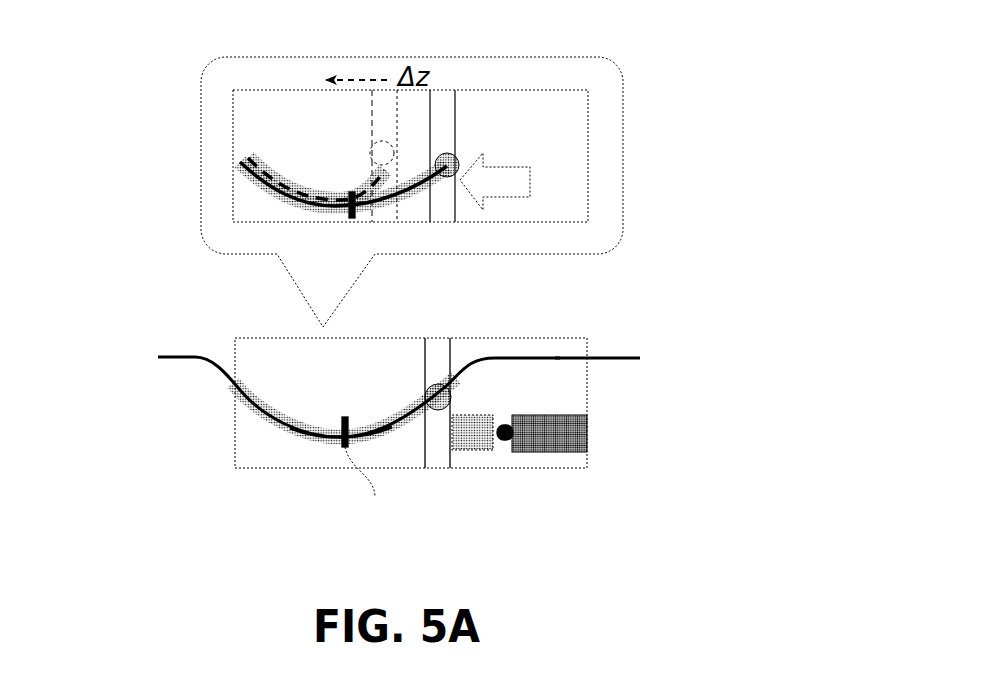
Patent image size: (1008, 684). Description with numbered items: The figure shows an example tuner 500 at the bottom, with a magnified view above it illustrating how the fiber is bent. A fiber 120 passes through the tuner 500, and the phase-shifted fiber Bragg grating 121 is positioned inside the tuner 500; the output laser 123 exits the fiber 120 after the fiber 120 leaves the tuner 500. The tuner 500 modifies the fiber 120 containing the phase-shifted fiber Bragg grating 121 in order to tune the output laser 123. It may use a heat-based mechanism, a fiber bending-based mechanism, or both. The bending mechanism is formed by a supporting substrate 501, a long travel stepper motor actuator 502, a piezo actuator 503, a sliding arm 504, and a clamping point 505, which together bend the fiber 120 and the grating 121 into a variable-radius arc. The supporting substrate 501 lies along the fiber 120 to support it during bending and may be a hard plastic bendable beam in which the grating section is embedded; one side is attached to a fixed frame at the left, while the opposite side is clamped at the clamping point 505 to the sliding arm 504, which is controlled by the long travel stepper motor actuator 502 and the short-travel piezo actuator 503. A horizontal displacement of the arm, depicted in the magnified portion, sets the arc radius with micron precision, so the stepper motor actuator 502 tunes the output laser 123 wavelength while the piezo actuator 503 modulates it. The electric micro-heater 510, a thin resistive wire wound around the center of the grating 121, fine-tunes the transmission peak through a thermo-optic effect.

The fiber 120 is at (153, 357).
The phase shifted fiber Bragg grating (PS-FBG) 121 is at (298, 435).
The output laser 123 is at (630, 358).
The tuner 500 is at (453, 316).
The supporting substrate 501 is at (308, 415).
The long travel stepper motor actuator 502 is at (548, 455).
The piezo actuator 503 is at (476, 455).
The sliding arm 504 is at (440, 449).
The clamping point 505 is at (439, 378).
The electric micro-heater 510 is at (338, 448).